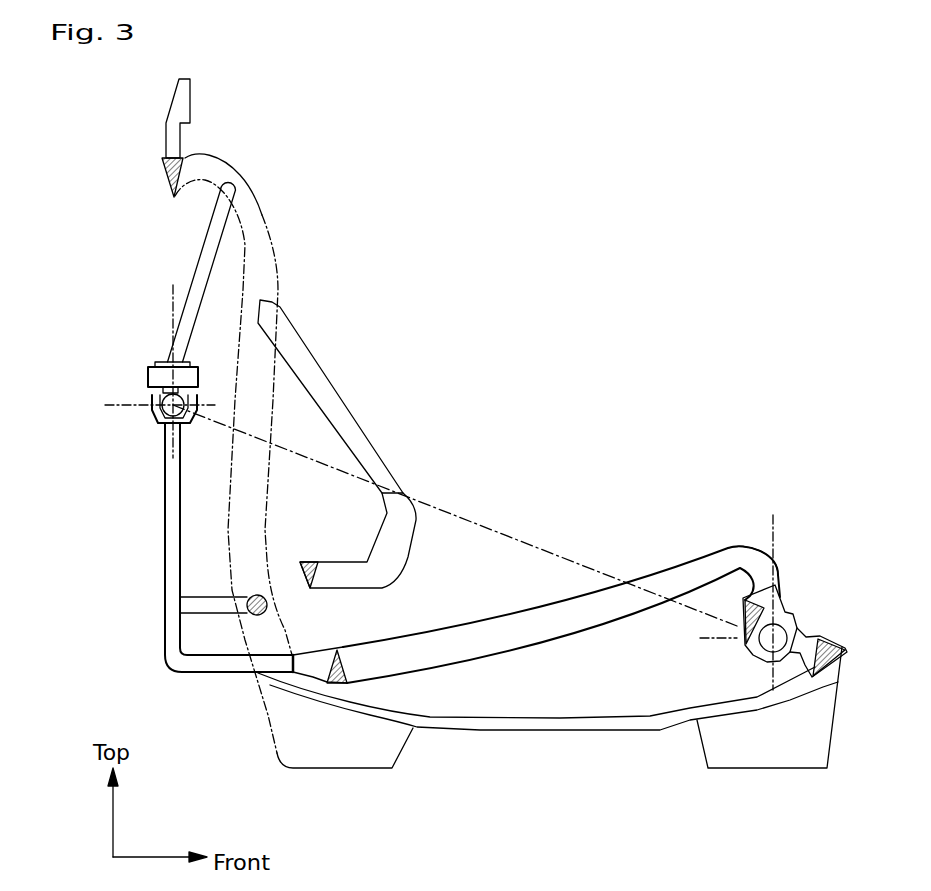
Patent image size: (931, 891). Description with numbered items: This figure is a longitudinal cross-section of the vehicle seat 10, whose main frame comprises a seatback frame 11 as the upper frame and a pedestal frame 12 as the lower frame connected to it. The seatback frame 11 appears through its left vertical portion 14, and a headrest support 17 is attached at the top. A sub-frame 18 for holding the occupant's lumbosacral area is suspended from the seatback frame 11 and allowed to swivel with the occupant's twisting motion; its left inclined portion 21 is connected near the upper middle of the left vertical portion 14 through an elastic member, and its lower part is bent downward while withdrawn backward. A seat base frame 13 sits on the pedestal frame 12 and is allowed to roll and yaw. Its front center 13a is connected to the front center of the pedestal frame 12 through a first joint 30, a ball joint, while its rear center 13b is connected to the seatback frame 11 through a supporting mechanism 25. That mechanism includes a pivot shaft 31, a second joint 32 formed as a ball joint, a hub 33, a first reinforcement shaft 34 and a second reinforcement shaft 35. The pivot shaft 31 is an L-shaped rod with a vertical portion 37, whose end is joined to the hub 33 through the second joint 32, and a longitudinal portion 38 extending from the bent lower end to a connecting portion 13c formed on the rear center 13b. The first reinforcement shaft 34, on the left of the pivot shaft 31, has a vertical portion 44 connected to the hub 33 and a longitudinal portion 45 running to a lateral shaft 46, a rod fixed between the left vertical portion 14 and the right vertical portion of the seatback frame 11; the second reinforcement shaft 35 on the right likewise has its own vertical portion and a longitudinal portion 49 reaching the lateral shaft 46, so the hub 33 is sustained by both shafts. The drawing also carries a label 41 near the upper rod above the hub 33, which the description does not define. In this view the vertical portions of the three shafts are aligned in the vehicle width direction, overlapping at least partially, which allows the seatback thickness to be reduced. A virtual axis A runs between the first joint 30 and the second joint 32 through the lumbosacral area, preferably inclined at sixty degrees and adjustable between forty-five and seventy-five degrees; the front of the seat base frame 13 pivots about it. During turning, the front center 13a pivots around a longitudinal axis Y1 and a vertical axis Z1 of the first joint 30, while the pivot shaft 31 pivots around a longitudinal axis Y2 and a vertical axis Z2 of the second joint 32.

The vehicle seat 10 is at (362, 404).
The seatback frame 11 is at (266, 205).
The pedestal frame 12 is at (503, 745).
The seat base frame 13 is at (536, 581).
The front center of the seat base frame 13a is at (737, 557).
The rear center of the seat base frame 13b is at (345, 667).
The connecting portion 13c is at (318, 660).
The left vertical portion 14 is at (258, 253).
The headrest support 17 is at (185, 98).
The sub-frame 18 is at (348, 444).
The left inclined portion 21 is at (357, 437).
The supporting mechanism 25 is at (211, 361).
The first joint 30 is at (787, 615).
The pivot shaft 31 is at (200, 580).
The second joint 32 is at (157, 400).
The hub 33 is at (153, 370).
The first reinforcement shaft 34 is at (175, 547).
The second reinforcement shaft 35 is at (154, 508).
The vertical portion of the pivot shaft 37 is at (173, 632).
The longitudinal portion of the pivot shaft 38 is at (213, 673).
The support rod 41 is at (213, 233).
The vertical portion of the first reinforcement shaft 44 is at (115, 570).
The longitudinal portion of the first reinforcement shaft 45 is at (258, 557).
The lateral shaft 46 is at (270, 605).
The longitudinal portion of the second reinforcement shaft 49 is at (207, 607).
The virtual axis A is at (478, 517).
The vertical axis of the first joint Z1 is at (778, 527).
The longitudinal axis of the first joint Y1 is at (737, 640).
The vertical axis of the second joint Z2 is at (172, 303).
The longitudinal axis of the second joint Y2 is at (132, 405).